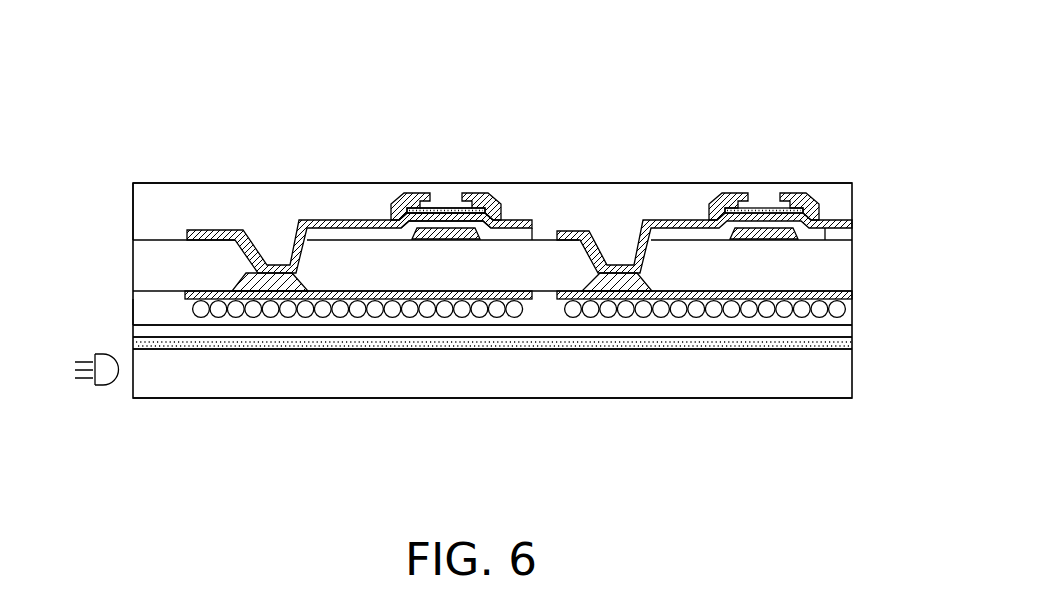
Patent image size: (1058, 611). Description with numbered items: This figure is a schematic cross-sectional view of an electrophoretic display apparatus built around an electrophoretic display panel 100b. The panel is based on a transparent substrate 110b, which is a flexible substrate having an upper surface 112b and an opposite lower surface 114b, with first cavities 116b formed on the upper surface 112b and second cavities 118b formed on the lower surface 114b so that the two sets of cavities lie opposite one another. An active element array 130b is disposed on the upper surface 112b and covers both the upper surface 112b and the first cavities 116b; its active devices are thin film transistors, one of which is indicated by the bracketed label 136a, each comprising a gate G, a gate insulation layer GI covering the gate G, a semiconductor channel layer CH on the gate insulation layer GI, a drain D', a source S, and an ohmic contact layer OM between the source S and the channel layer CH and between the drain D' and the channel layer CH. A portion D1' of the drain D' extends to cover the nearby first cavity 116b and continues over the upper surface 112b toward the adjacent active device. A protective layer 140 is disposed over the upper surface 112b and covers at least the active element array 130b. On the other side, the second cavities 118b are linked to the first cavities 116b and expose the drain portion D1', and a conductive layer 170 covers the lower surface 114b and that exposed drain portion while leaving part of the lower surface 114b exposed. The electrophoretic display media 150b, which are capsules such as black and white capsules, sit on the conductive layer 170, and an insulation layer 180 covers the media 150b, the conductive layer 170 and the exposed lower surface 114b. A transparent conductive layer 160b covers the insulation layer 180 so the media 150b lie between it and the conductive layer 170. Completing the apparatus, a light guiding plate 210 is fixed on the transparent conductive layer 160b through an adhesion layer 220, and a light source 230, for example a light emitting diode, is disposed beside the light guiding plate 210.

The electrophoretic display panel 100b is at (790, 421).
The light guiding plate 210 is at (846, 375).
The adhesion layer 220 is at (852, 346).
The insulation layer 180 is at (547, 318).
The transparent conductive layer 160b is at (425, 330).
The electrophoretic display media 150b is at (677, 308).
The lower surface 114b is at (823, 298).
The transparent substrate 110b is at (838, 274).
The protective layer 140 is at (213, 205).
The conductive layer 170 is at (268, 276).
The portion of the drain D1' is at (359, 190).
The upper surface 112b is at (826, 228).
The second cavities 118b is at (596, 285).
The first cavities 116b is at (598, 246).
The thin film transistor 136a is at (451, 143).
The active element array 130b is at (764, 216).
The gate G is at (443, 233).
The gate insulation layer GI is at (452, 213).
The semiconductor channel layer CH is at (428, 208).
The drain D' is at (386, 163).
The source S is at (492, 200).
The ohmic contact layer OM is at (470, 157).
The light source 230 is at (103, 386).